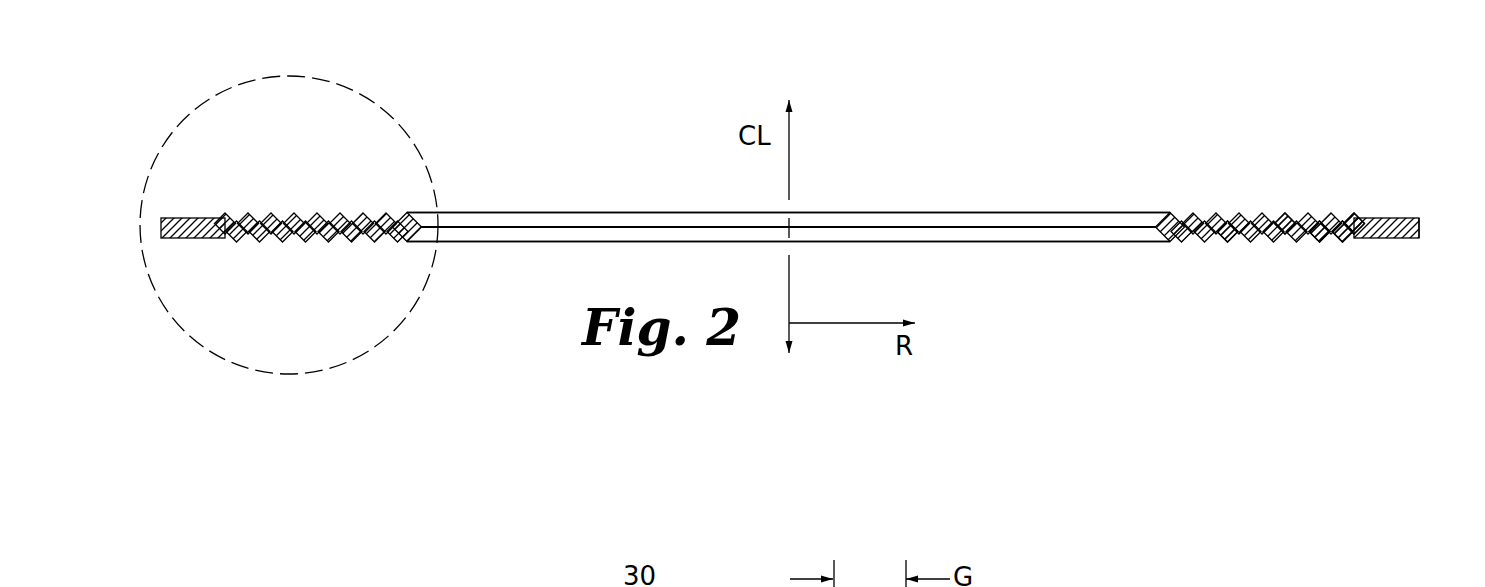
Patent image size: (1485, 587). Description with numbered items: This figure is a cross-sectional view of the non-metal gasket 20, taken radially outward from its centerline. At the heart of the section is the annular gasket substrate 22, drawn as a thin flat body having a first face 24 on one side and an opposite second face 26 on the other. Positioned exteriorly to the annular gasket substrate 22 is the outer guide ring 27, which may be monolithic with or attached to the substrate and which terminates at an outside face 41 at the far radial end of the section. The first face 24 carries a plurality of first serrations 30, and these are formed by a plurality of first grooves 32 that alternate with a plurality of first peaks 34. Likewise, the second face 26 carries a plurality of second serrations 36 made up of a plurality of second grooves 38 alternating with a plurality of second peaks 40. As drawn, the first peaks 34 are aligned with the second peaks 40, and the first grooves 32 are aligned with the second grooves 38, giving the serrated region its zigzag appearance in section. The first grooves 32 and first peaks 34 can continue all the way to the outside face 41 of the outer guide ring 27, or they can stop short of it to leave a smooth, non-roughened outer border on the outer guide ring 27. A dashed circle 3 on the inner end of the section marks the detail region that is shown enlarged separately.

The detail region (enlarged view circle) 3 is at (193, 115).
The non-metal gasket 20 is at (819, 212).
The annular gasket substrate 22 is at (665, 220).
The first face 24 is at (970, 212).
The second face 26 is at (1007, 242).
The outer guide ring 27 is at (1373, 235).
The plurality of first serrations 30 is at (1240, 212).
The plurality of first grooves 32 is at (1297, 228).
The plurality of first peaks 34 is at (1353, 217).
The plurality of second serrations 36 is at (1240, 243).
The plurality of second grooves 38 is at (1322, 235).
The plurality of second peaks 40 is at (1330, 238).
The outside face 41 is at (1420, 225).